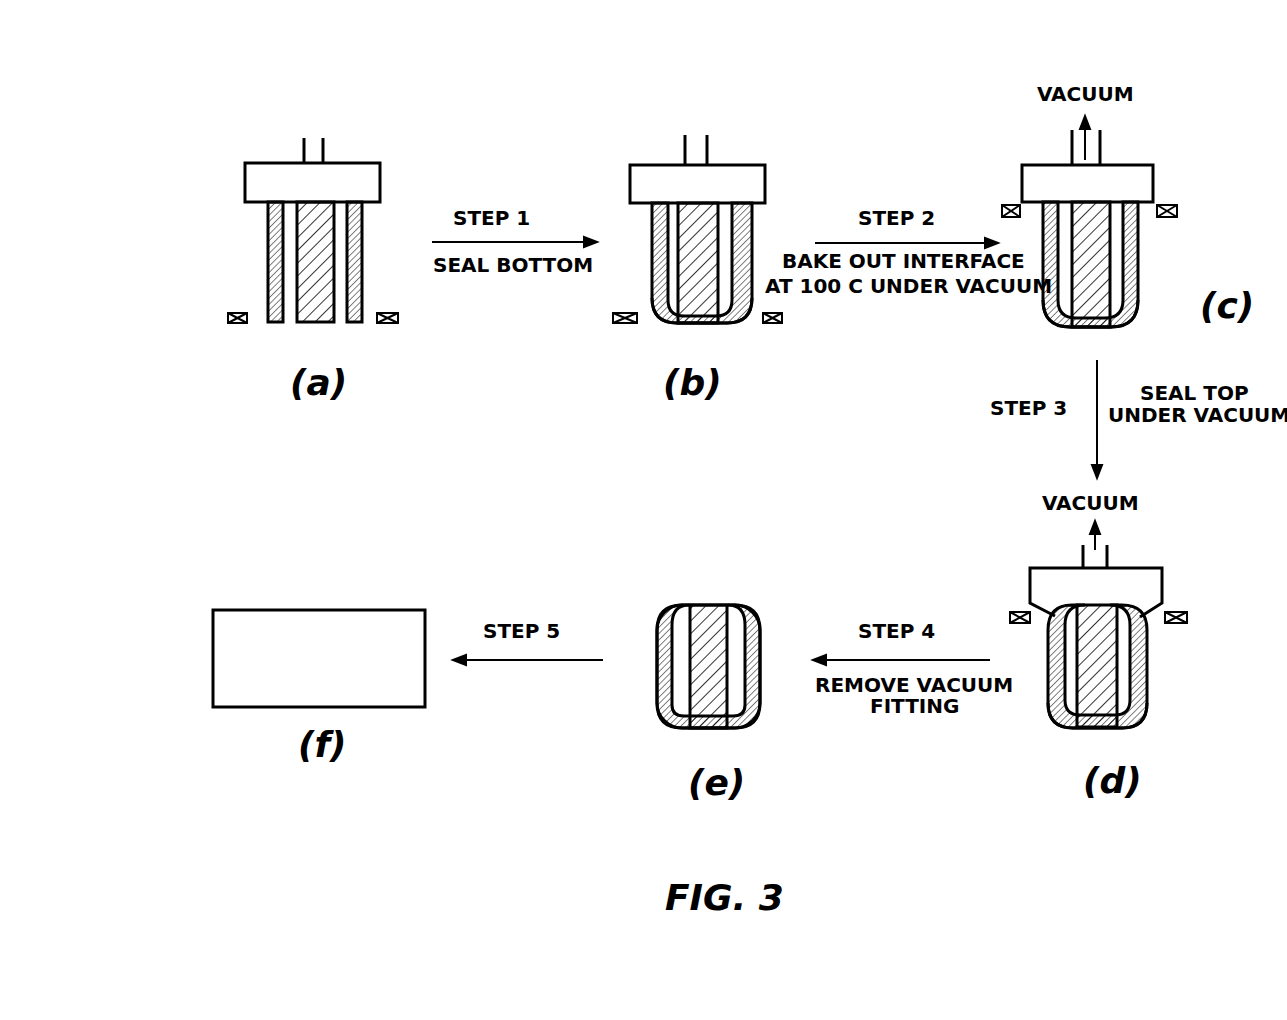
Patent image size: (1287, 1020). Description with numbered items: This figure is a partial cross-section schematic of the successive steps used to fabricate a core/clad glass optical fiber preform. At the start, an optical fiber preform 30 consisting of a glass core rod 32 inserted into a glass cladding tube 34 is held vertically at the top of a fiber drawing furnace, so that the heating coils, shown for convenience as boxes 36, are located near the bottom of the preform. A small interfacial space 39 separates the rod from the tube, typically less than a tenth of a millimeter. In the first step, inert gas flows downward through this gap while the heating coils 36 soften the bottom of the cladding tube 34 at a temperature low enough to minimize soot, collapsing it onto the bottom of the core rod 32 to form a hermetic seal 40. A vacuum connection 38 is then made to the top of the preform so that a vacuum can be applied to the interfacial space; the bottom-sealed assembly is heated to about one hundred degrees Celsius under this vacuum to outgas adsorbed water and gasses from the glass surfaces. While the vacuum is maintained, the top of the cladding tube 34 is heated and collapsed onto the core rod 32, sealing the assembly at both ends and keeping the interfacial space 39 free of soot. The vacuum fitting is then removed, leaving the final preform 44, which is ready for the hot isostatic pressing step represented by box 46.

The optical fiber preform 30 is at (250, 112).
The glass core rod 32 is at (333, 323).
The glass cladding tube 34 is at (362, 233).
The heating coils 36 is at (228, 316).
The vacuum connection 38 is at (350, 163).
The interfacial space 39 is at (297, 237).
The hermetic seal 40 is at (733, 338).
The final preform 44 is at (693, 580).
The hot isostatic pressing 46 is at (348, 600).